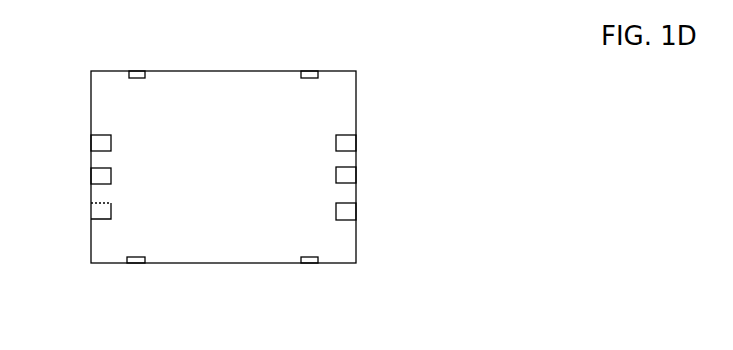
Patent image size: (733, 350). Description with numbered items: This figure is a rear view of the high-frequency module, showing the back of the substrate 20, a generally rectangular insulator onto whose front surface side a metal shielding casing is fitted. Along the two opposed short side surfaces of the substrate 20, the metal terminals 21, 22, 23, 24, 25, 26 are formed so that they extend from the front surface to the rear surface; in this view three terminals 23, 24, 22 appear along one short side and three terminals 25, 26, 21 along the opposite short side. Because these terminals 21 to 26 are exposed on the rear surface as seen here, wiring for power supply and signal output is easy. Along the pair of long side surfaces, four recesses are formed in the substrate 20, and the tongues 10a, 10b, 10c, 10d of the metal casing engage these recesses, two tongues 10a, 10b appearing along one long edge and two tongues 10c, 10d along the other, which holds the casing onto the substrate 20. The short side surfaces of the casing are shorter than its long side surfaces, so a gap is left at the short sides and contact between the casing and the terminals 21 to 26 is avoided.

The substrate 20 is at (357, 108).
The tongue 10a is at (129, 70).
The tongue 10b is at (317, 70).
The tongue 10c is at (133, 264).
The tongue 10d is at (310, 264).
The metal terminal 21 is at (357, 211).
The metal terminal 22 is at (91, 211).
The metal terminal 23 is at (91, 138).
The metal terminal 24 is at (91, 175).
The metal terminal 25 is at (357, 139).
The metal terminal 26 is at (357, 175).